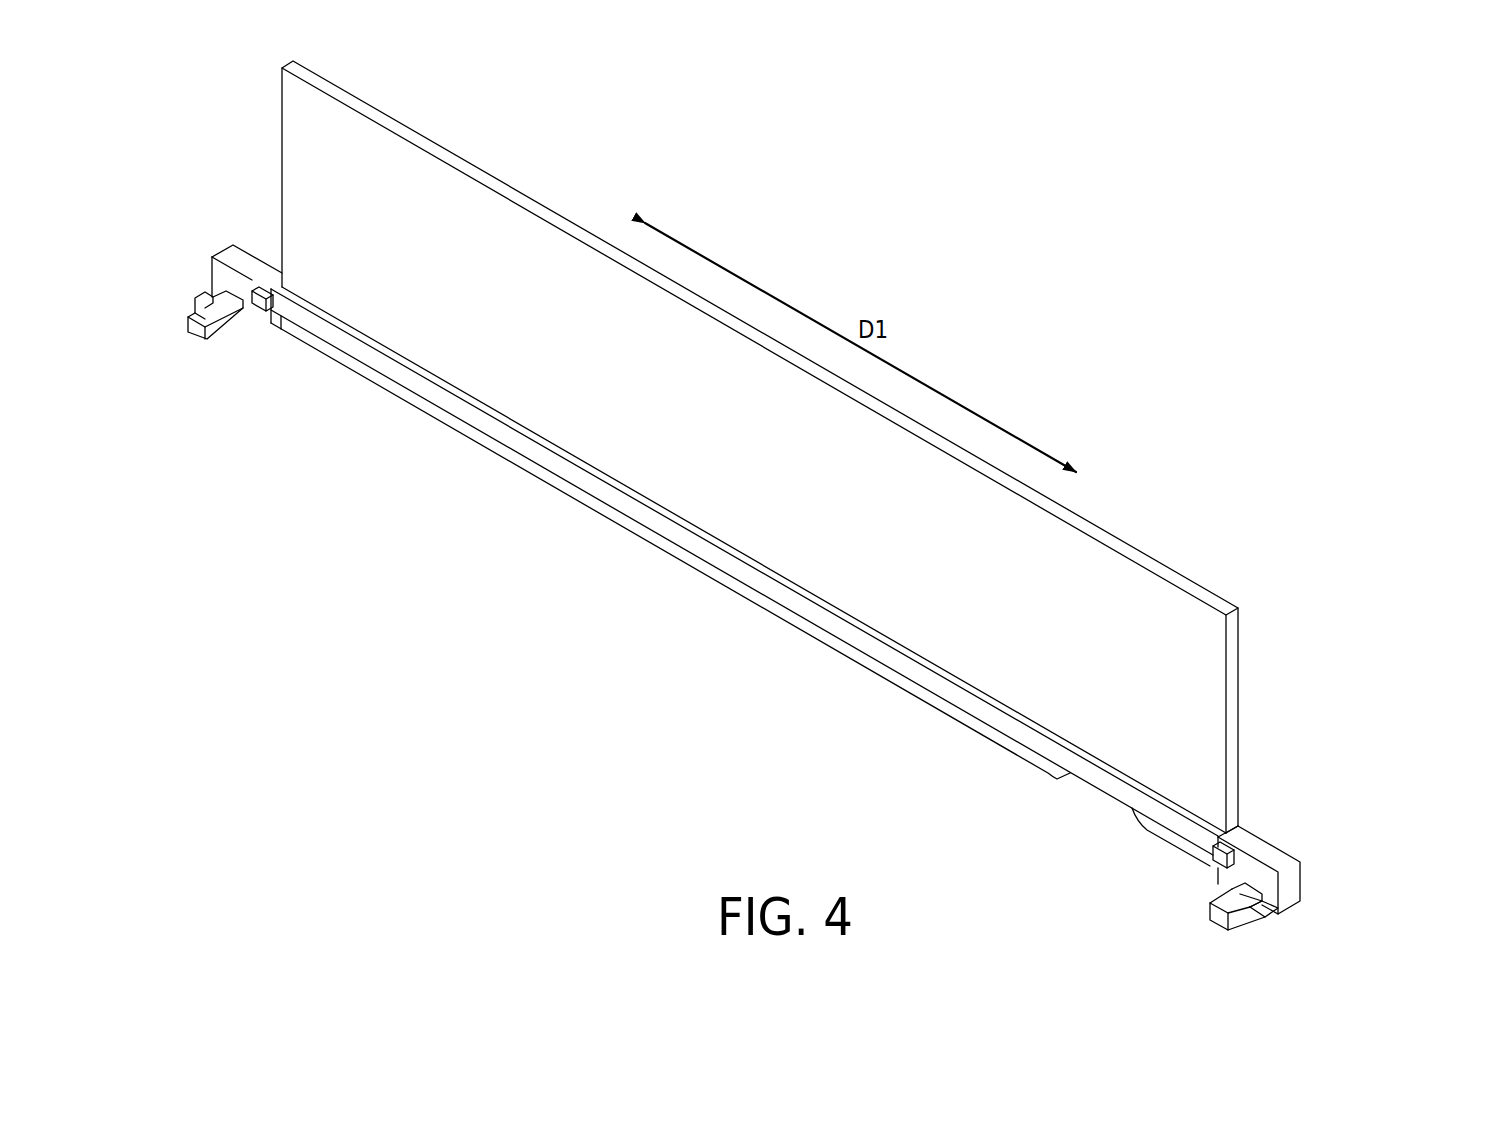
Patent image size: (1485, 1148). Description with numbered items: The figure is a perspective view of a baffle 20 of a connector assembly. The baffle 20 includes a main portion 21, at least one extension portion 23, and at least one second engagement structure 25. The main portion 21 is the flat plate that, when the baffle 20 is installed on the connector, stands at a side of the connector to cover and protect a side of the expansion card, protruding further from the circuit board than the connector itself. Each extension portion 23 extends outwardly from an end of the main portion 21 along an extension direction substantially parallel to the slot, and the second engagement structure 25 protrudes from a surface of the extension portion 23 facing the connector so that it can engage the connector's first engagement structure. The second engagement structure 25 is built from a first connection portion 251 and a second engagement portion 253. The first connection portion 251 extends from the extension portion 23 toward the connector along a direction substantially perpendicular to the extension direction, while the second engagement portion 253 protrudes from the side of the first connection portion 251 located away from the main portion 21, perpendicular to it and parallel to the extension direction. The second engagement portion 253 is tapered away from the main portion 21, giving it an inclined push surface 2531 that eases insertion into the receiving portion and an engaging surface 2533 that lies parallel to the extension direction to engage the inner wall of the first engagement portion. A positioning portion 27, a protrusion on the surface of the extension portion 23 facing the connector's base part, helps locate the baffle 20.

The baffle 20 is at (135, 92).
The main portion 21 is at (1135, 540).
The extension portion 23 is at (220, 248).
The second engagement structure 25 is at (786, 613).
The positioning portion 27 is at (257, 314).
The first connection portion 251 is at (1265, 896).
The second engagement portion 253 is at (1275, 921).
The inclined push surface 2531 is at (1255, 908).
The engaging surface 2533 is at (1240, 882).